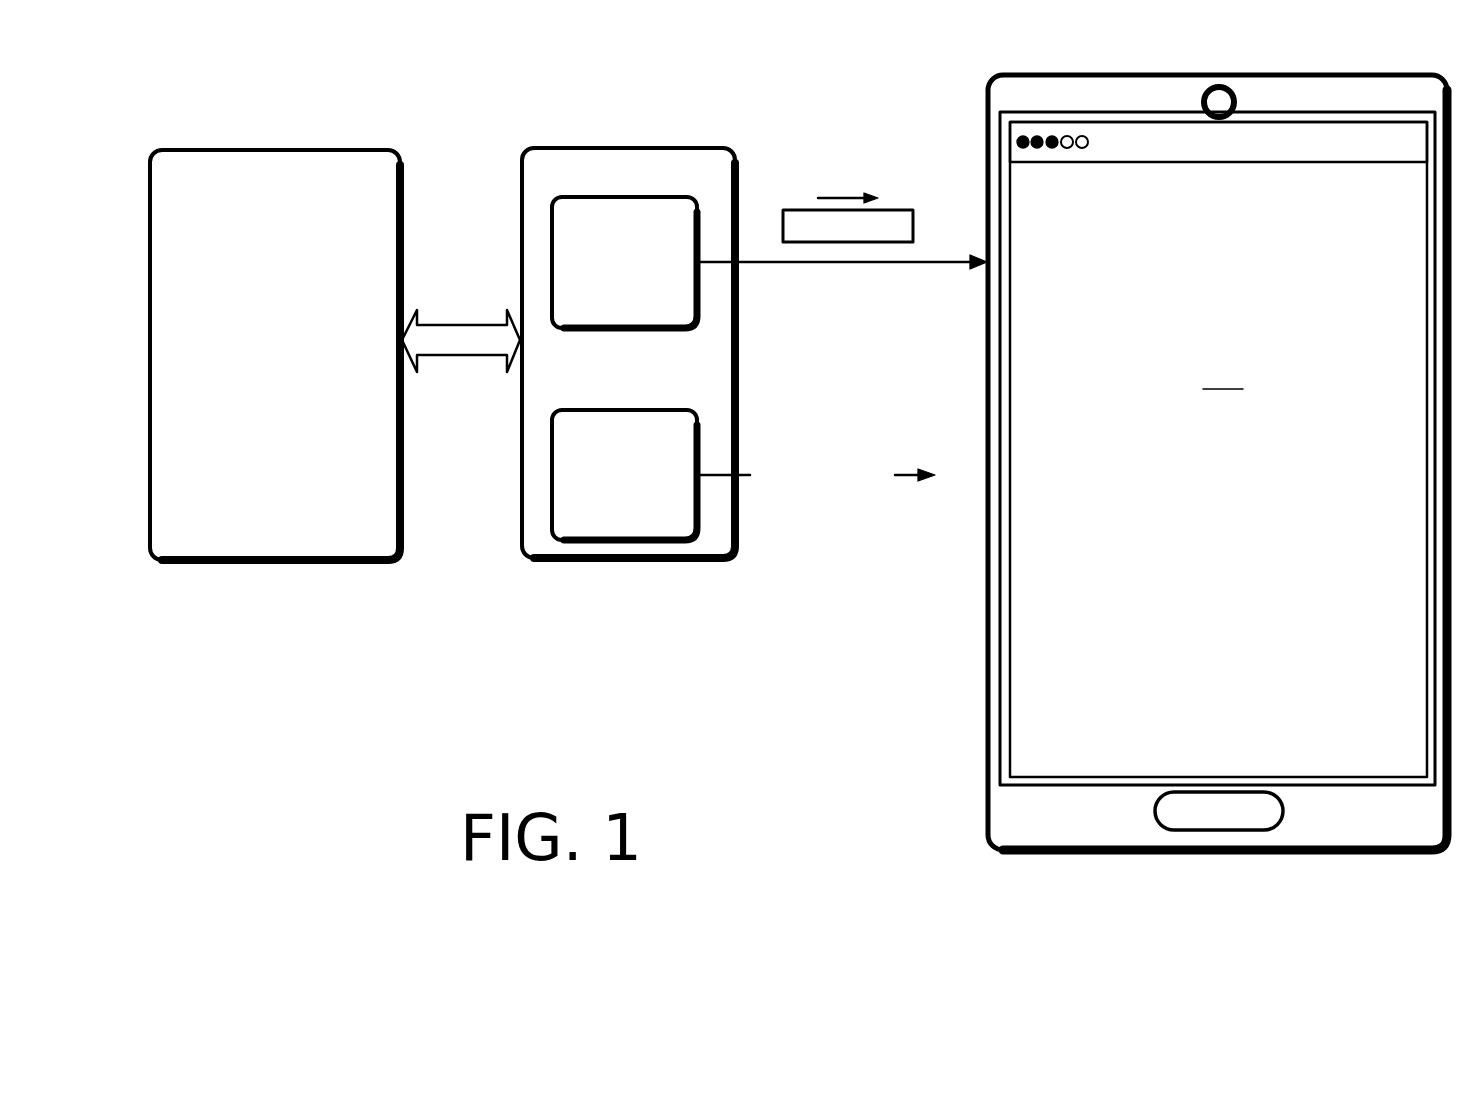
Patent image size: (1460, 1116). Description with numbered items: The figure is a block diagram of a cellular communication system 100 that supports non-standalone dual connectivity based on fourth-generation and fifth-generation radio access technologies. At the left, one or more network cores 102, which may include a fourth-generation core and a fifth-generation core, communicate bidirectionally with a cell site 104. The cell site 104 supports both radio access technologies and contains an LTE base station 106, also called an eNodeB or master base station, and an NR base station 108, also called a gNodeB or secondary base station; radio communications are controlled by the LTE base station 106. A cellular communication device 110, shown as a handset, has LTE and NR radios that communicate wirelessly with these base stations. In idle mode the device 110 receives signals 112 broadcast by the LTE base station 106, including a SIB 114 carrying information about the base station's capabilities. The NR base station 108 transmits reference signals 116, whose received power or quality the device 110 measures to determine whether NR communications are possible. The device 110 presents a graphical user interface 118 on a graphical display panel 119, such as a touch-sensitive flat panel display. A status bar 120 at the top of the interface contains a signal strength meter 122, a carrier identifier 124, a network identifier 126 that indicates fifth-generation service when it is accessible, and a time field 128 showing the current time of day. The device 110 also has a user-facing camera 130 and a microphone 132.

The cellular communication system 100 is at (162, 72).
The network core 102 is at (377, 158).
The cell site 104 is at (706, 160).
The LTE base station 106 is at (565, 222).
The NR base station 108 is at (565, 438).
The cellular communication device 110 is at (997, 363).
The signals 112 is at (850, 262).
The SIB 114 is at (795, 210).
The reference signals 116 is at (905, 478).
The graphical user interface 118 is at (1223, 378).
The graphical display panel 119 is at (1005, 480).
The status bar 120 is at (1015, 140).
The signal strength meter 122 is at (1062, 132).
The carrier identifier 124 is at (1135, 132).
The network identifier 126 is at (1240, 137).
The time field 128 is at (1373, 128).
The user-facing camera 130 is at (1208, 88).
The microphone 132 is at (1180, 820).